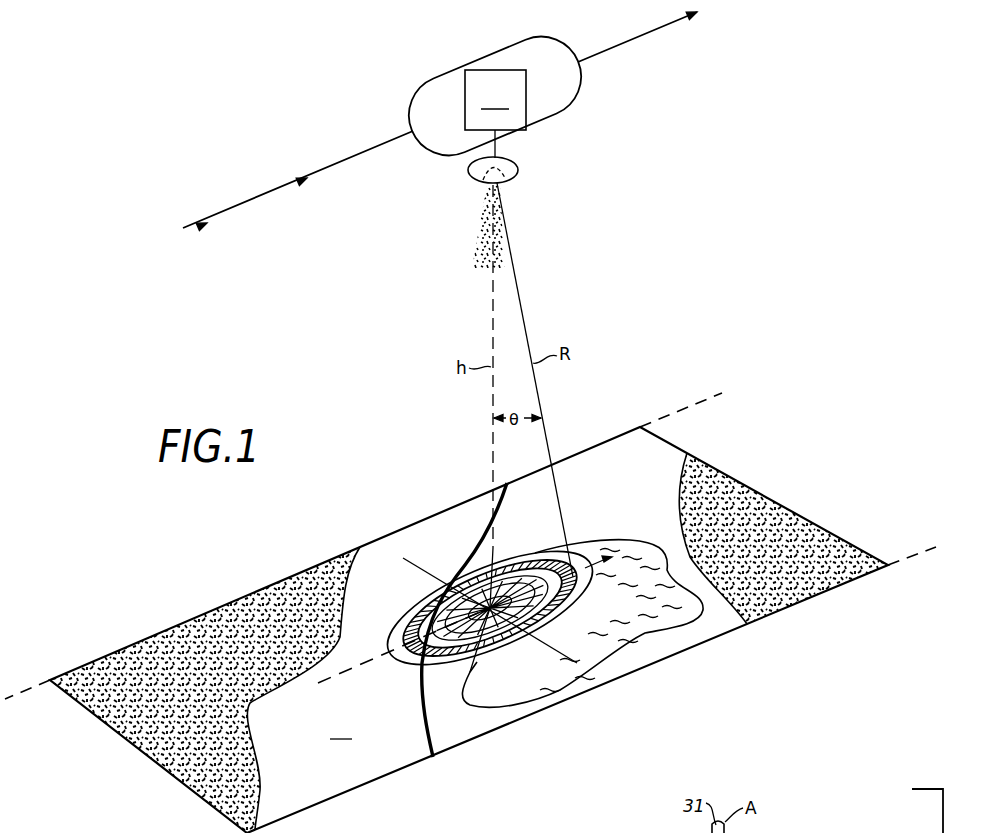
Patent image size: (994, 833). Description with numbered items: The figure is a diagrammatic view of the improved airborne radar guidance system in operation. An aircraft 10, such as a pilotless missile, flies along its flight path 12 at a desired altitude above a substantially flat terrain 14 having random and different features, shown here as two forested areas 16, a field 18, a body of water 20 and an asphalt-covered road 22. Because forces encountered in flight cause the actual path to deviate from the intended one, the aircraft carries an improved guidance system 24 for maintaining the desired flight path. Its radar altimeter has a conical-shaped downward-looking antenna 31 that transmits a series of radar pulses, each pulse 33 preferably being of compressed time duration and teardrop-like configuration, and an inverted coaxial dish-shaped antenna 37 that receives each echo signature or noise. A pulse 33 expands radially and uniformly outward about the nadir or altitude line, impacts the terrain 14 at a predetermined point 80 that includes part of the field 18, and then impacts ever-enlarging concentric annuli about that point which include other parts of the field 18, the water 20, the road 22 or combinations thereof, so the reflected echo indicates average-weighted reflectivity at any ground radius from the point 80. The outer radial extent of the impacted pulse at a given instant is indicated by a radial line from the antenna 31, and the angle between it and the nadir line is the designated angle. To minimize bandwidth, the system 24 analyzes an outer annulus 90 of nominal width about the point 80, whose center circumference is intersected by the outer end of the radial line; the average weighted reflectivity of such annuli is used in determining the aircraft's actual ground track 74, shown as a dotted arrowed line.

The aircraft 10 is at (470, 54).
The flight path 12 is at (240, 204).
The terrain 14 is at (148, 632).
The forested areas 16 is at (178, 780).
The field 18 is at (341, 729).
The body of water 20 is at (603, 540).
The asphalt-covered road 22 is at (427, 743).
The guidance system 24 is at (495, 114).
The downward-looking antenna 31 is at (518, 166).
The radar pulse 33 is at (481, 234).
The dish-shaped antenna 37 is at (472, 174).
The actual ground track 74 is at (387, 662).
The predetermined point 80 is at (453, 571).
The outer annulus 90 is at (410, 598).